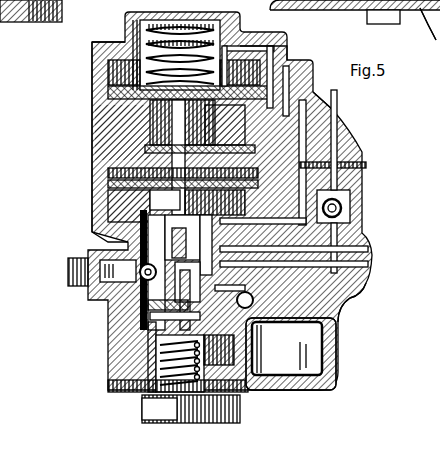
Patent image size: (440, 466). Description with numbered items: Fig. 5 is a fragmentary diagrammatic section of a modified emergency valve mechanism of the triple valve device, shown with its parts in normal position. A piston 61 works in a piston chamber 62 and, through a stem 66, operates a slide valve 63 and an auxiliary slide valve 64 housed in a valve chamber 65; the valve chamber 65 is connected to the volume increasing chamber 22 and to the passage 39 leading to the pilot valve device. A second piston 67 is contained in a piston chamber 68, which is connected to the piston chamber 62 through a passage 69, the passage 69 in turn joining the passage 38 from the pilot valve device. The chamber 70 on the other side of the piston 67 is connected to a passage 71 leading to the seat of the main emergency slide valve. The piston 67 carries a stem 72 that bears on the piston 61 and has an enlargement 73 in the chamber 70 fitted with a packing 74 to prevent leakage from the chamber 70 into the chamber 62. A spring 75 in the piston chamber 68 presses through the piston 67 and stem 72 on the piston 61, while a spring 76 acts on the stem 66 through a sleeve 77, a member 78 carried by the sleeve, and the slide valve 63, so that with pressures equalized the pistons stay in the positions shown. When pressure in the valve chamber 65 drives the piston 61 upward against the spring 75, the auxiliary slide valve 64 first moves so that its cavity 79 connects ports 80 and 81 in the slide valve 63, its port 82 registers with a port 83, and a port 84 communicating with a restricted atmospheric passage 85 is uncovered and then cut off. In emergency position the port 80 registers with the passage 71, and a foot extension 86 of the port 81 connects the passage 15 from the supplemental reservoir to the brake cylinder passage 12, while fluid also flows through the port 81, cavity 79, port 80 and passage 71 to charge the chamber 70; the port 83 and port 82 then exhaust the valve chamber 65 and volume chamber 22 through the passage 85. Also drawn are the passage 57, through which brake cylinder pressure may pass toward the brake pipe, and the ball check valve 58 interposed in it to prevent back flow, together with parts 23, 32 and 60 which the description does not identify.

The brake cylinder passage 12 is at (354, 265).
The passage 15 is at (352, 252).
The volume increasing chamber 22 is at (300, 350).
The adjacent housing 23 is at (220, 27).
The conduit 32 is at (430, 31).
The passage 38 is at (300, 98).
The passage 39 is at (316, 118).
The passage 57 is at (336, 160).
The ball check valve 58 is at (340, 204).
The insert 60 is at (225, 125).
The piston 61 is at (110, 208).
The piston chamber 62 is at (120, 175).
The slide valve 63 is at (94, 236).
The auxiliary slide valve 64 is at (148, 306).
The valve chamber 65 is at (150, 330).
The stem 66 is at (150, 350).
The piston 67 is at (98, 90).
The piston chamber 68 is at (96, 64).
The passage 69 is at (288, 46).
The chamber 70 is at (98, 108).
The passage 71 is at (328, 96).
The stem 72 is at (120, 184).
The enlargement 73 is at (183, 157).
The packing 74 is at (160, 128).
The spring 75 is at (140, 36).
The spring 76 is at (120, 392).
The sleeve 77 is at (130, 372).
The member 78 is at (284, 354).
The cavity 79 is at (88, 252).
The port 80 is at (179, 270).
The port 81 is at (262, 286).
The port 82 is at (70, 292).
The port 83 is at (286, 348).
The port 84 is at (150, 318).
The restricted passage 85 is at (255, 302).
The foot extension 86 is at (344, 308).